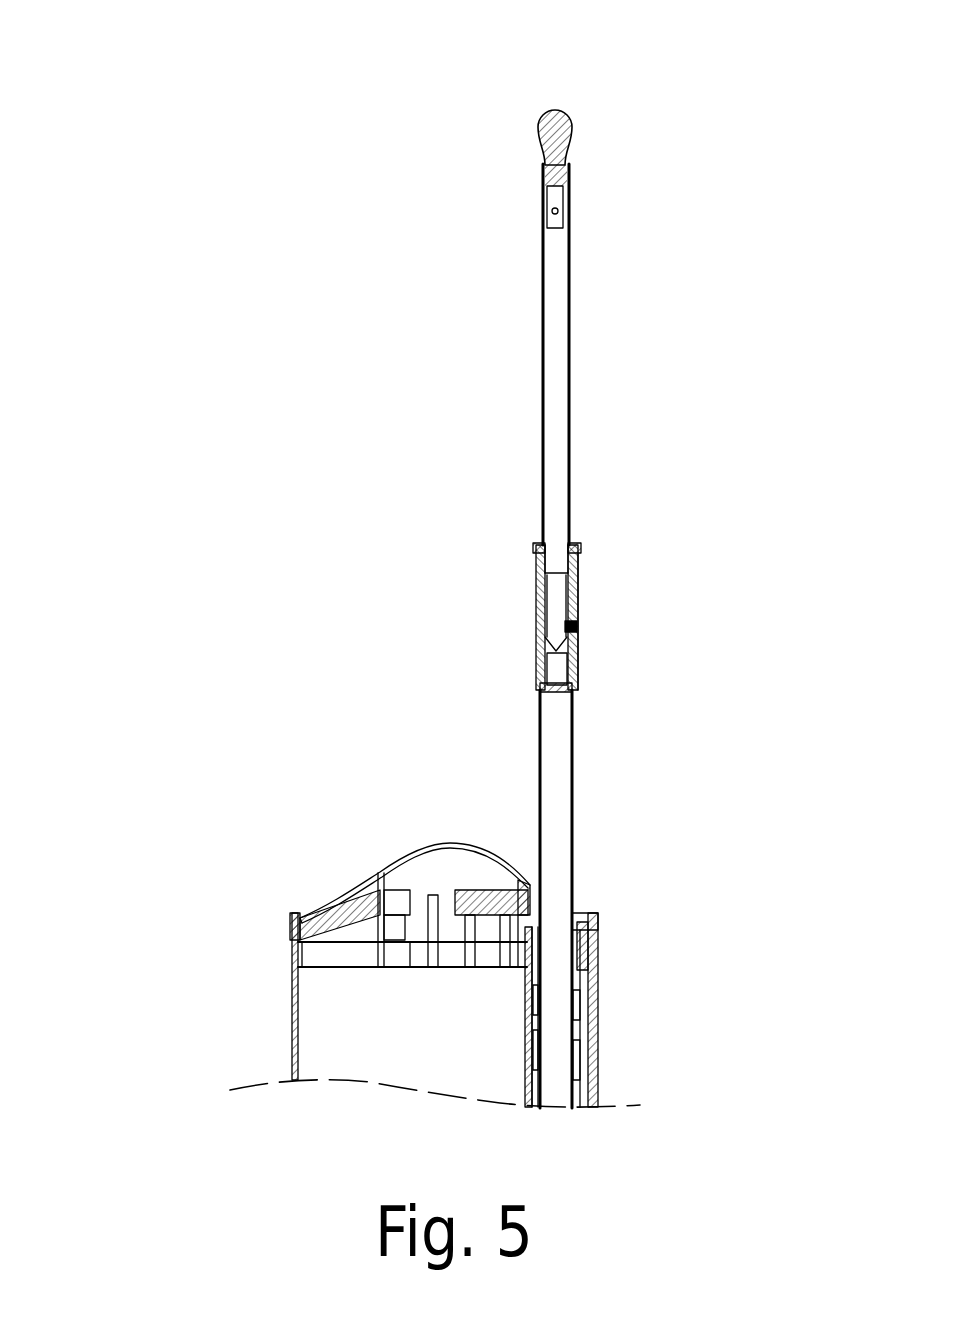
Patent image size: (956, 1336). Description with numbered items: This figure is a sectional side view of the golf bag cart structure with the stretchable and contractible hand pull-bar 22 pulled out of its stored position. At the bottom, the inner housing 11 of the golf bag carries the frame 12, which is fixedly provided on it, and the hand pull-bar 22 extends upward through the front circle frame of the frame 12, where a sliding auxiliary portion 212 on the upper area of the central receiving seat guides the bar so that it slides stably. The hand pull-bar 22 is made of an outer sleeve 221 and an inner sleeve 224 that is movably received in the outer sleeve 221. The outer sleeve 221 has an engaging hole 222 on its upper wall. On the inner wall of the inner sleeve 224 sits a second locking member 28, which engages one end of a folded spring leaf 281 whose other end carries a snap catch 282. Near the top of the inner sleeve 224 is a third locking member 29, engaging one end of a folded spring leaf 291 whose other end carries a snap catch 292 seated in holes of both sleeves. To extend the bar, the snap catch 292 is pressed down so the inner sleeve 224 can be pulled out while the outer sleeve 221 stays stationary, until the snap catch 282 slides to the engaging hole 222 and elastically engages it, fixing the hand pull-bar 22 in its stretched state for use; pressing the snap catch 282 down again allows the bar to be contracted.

The inner housing 11 is at (293, 1025).
The frame 12 is at (390, 858).
The sliding auxiliary portion 212 is at (580, 905).
The stretchable and contractible hand pull-bar 22 is at (558, 286).
The outer sleeve 221 is at (540, 750).
The engaging hole 222 is at (576, 622).
The inner sleeve 224 is at (572, 505).
The second locking member 28 is at (527, 594).
The folded spring leaf 281 is at (540, 650).
The snap catch 282 is at (578, 626).
The third locking member 29 is at (529, 195).
The folded spring leaf 291 is at (545, 193).
The snap catch 292 is at (548, 211).